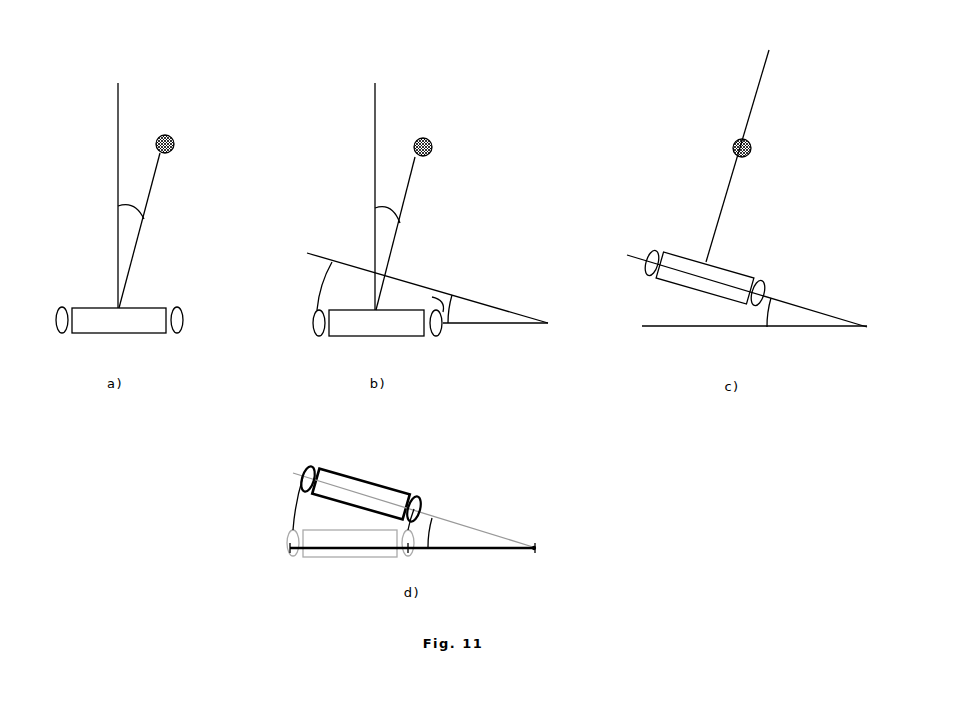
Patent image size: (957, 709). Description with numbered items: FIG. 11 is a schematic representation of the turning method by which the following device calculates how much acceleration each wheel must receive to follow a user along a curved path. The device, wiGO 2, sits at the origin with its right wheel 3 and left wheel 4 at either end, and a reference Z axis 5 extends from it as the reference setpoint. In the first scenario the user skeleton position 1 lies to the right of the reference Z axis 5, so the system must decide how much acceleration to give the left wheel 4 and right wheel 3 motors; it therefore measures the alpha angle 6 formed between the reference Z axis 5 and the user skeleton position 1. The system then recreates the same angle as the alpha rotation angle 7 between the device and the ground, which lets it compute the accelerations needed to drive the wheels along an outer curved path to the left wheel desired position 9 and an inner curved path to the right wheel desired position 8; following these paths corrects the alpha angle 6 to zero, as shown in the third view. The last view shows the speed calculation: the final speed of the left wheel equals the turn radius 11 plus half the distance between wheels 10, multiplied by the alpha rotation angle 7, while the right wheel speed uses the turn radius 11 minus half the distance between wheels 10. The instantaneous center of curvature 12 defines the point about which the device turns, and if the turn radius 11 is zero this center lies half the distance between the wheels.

The user skeleton position 1 is at (451, 221).
The wiGO 2 is at (413, 385).
The right wheel 3 is at (466, 335).
The left wheel 4 is at (348, 335).
The reference Z axis 5 is at (439, 180).
The alpha angle 6 is at (417, 215).
The alpha rotation angle 7 is at (580, 400).
The right wheel desired position 8 is at (539, 408).
The left wheel desired position 9 is at (477, 393).
The distance between wheels 10 is at (349, 555).
The turn radius 11 is at (471, 555).
The instantaneous center of curvature 12 is at (554, 544).